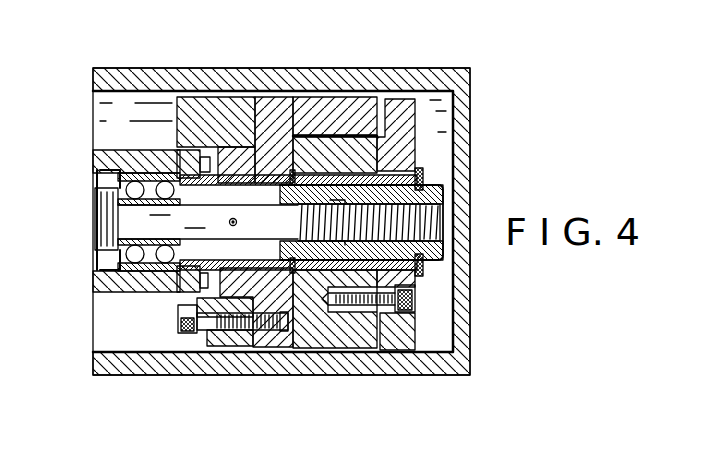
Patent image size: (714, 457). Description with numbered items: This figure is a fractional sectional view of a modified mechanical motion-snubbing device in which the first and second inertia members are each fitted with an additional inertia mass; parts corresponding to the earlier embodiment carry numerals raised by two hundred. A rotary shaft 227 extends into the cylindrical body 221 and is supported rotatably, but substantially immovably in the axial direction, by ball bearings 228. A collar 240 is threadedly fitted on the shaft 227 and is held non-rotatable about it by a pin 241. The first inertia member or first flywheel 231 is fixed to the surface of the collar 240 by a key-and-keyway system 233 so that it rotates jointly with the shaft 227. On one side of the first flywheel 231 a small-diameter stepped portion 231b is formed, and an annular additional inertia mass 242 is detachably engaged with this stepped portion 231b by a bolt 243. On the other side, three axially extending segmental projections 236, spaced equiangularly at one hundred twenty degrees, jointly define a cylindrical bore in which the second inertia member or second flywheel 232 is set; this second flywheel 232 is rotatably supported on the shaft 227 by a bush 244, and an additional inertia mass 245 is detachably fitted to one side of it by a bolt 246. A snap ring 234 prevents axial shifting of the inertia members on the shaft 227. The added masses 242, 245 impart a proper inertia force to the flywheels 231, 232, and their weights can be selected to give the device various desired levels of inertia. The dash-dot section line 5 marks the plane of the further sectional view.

The cylindrical body 221 is at (150, 55).
The additional inertia mass 242 is at (210, 107).
The first inertia member or first flywheel 231 is at (283, 107).
The stepped portion 231b is at (233, 147).
The segmental projections 236 is at (345, 107).
The additional inertia mass 245 is at (398, 107).
The second inertia member or second flywheel 232 is at (365, 152).
The ball bearings 228 is at (147, 289).
The rotary shaft 227 is at (96, 216).
The pin 241 is at (228, 222).
The key-and-keyway system 233 is at (325, 222).
The snap ring 234 is at (478, 299).
The collar 240 is at (437, 257).
The bolt 243 is at (207, 332).
The bush 244 is at (412, 296).
The bolt 246 is at (405, 322).
The section line 5- 5 is at (318, 66).